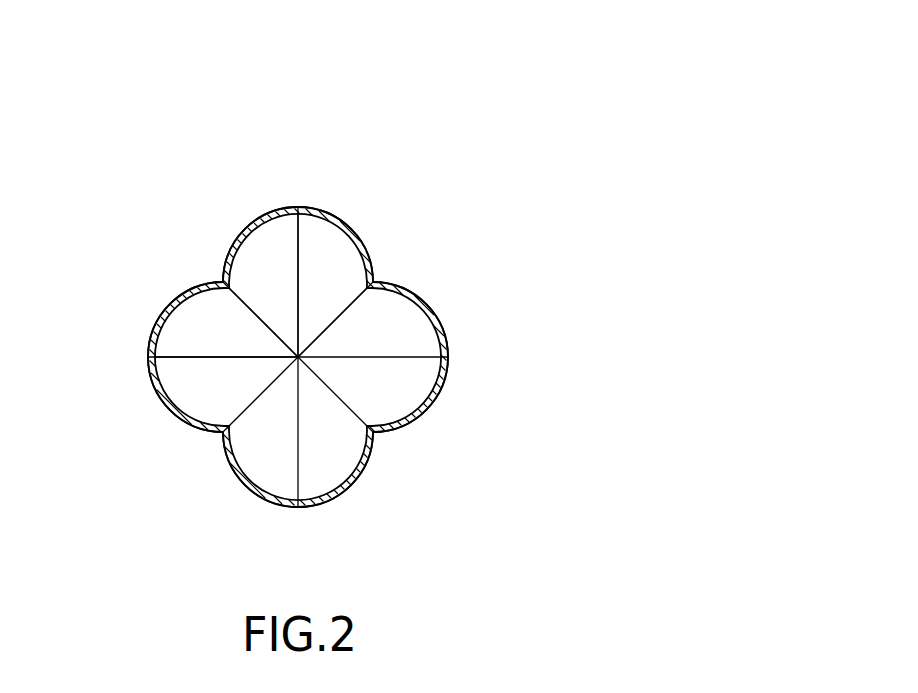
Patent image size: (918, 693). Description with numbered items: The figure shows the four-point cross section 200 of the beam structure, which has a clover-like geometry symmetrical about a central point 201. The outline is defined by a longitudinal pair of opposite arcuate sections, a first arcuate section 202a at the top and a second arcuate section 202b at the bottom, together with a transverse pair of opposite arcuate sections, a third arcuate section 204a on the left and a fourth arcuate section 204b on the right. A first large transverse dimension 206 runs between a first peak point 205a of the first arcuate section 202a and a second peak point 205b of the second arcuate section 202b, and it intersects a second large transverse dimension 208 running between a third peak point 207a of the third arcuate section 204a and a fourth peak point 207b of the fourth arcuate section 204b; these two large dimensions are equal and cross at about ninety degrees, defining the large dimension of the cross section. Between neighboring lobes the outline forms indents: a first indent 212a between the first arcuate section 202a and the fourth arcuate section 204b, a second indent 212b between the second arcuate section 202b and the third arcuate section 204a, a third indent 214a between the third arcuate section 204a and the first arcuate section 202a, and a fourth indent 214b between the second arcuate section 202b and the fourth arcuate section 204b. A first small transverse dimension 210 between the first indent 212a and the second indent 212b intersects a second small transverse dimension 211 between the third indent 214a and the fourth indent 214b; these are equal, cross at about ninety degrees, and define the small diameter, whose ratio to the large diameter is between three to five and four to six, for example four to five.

The four-point cross section 200 is at (474, 113).
The central point 201 is at (310, 350).
The first arcuate section 202a is at (258, 202).
The second arcuate section 202b is at (355, 515).
The third arcuate section 204a is at (148, 397).
The fourth arcuate section 204b is at (495, 315).
The first peak point 205a is at (298, 208).
The second peak point 205b is at (298, 508).
The first large transverse dimension 206 is at (300, 300).
The third peak point 207a is at (149, 356).
The fourth peak point 207b is at (448, 357).
The second large transverse dimension 208 is at (248, 355).
The first small transverse dimension 210 is at (365, 268).
The second small transverse dimension 211 is at (255, 308).
The first indent 212a is at (371, 285).
The second indent 212b is at (221, 431).
The third indent 214a is at (226, 285).
The fourth indent 214b is at (373, 431).